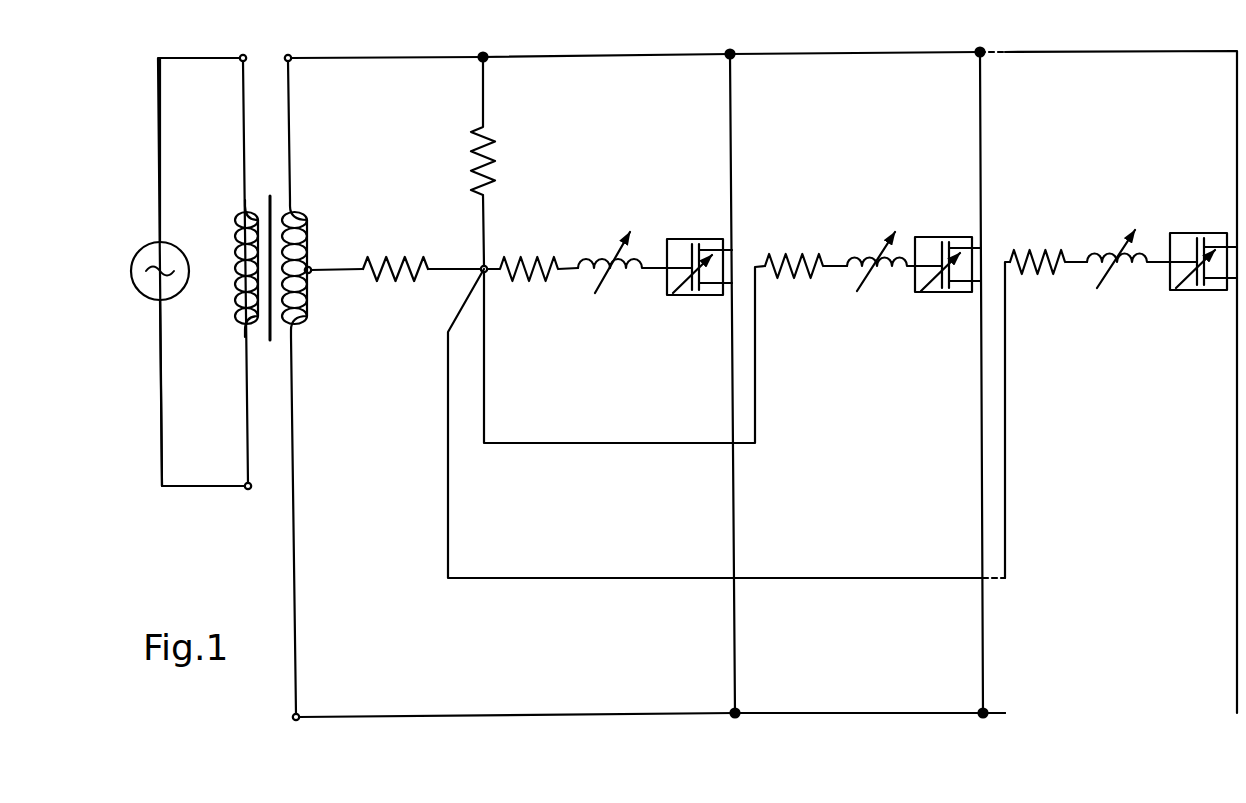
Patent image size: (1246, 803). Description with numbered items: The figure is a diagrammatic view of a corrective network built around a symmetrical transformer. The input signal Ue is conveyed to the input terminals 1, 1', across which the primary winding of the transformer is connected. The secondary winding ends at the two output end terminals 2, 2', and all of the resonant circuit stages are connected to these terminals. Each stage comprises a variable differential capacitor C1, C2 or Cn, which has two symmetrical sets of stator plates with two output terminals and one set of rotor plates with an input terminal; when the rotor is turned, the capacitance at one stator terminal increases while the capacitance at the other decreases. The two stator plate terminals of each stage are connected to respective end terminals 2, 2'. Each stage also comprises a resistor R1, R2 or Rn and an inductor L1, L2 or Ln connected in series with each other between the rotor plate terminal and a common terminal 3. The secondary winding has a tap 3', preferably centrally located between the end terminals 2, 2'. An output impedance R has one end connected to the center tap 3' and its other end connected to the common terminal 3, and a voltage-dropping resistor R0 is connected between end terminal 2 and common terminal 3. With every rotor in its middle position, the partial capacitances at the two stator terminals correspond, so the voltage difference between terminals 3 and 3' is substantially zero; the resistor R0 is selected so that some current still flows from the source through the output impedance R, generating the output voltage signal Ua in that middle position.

The input terminal 1 is at (228, 39).
The input terminal 1' is at (259, 504).
The output end terminal 2 is at (310, 366).
The output end terminal 2' is at (315, 738).
The common terminal 3 is at (469, 251).
The tap 3' is at (334, 291).
The input signal Ue is at (198, 290).
The output voltage signal Ua is at (428, 246).
The output impedance R is at (386, 281).
The voltage-dropping resistor R0 is at (490, 150).
The resistor R1 is at (527, 281).
The resistor R2 is at (780, 278).
The resistor Rn is at (1027, 274).
The inductor L1 is at (612, 276).
The inductor L2 is at (873, 273).
The inductor Ln is at (1120, 268).
The variable capacitor C1 is at (675, 296).
The variable capacitor C2 is at (938, 293).
The variable capacitor Cn is at (1188, 291).